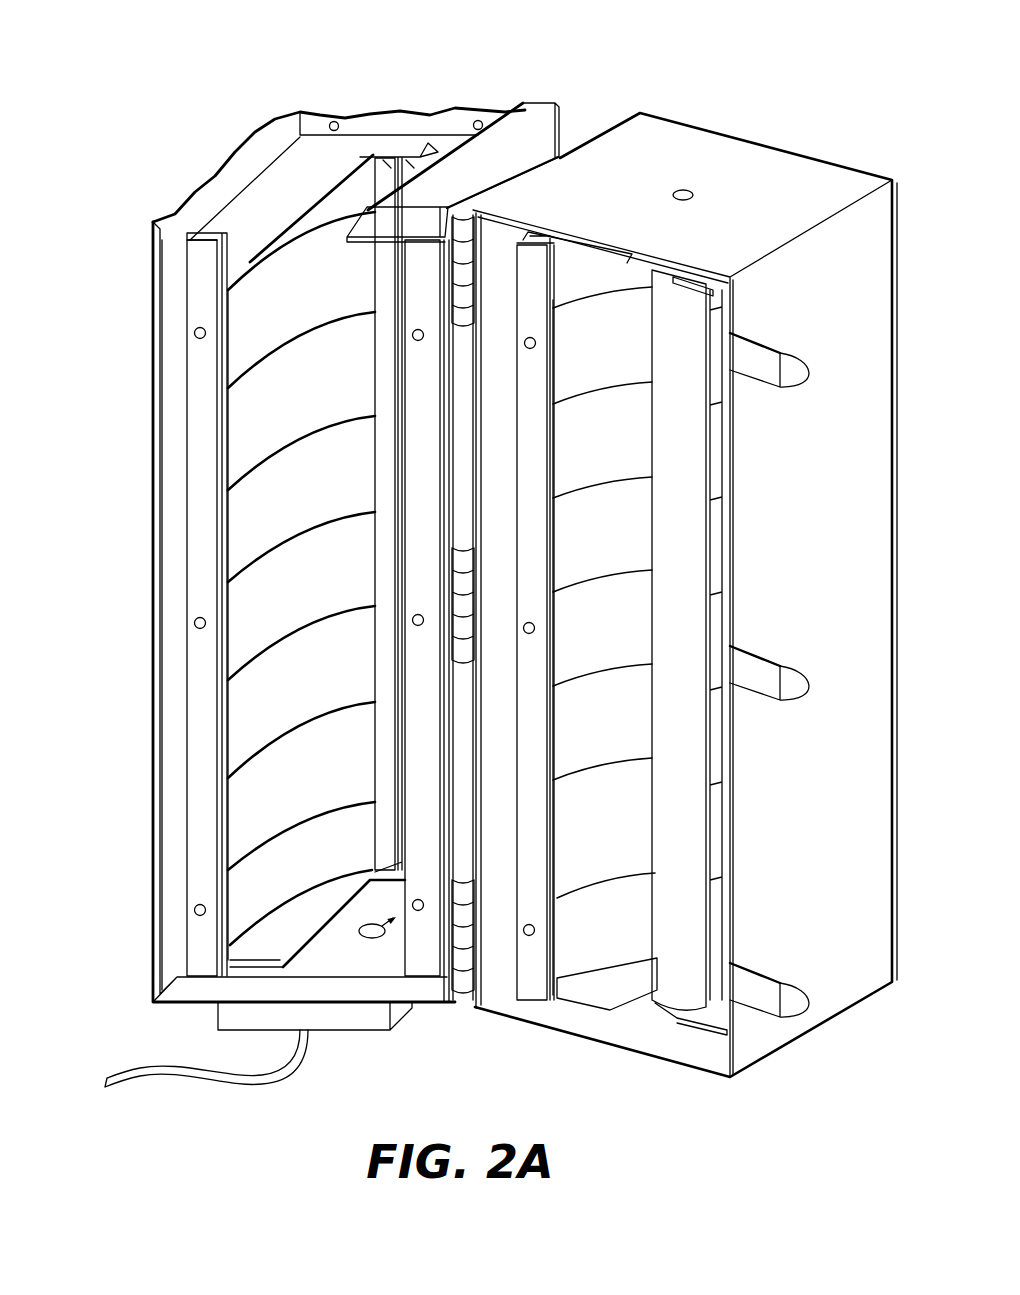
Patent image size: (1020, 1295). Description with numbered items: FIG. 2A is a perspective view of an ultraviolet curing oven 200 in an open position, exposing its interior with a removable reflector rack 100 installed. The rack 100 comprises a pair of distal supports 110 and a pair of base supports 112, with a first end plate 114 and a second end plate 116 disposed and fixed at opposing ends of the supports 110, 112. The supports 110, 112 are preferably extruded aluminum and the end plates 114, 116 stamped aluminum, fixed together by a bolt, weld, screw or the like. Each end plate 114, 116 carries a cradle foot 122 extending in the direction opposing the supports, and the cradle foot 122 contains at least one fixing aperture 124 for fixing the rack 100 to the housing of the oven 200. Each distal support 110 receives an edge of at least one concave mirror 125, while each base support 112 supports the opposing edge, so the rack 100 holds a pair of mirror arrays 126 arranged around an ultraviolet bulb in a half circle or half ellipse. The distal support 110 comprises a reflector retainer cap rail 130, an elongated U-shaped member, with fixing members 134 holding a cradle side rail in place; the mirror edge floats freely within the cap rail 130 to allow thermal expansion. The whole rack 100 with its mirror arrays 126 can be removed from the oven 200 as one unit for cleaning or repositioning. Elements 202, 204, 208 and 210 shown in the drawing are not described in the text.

The removable reflector rack 100 is at (255, 982).
The distal support 110 is at (203, 481).
The base support 112 is at (410, 165).
The first end plate 114 is at (292, 948).
The second end plate 116 is at (297, 213).
The cradle foot 122 is at (332, 118).
The fixing aperture 124 is at (340, 116).
The mirror 125 is at (258, 305).
The mirror array 126 is at (314, 913).
The reflector retainer cap rail 130 is at (200, 826).
The fixing member 134 is at (195, 915).
The ultraviolet curing oven 200 is at (188, 126).
The cover plate 202 is at (532, 112).
The enclosure 204 is at (745, 165).
The support rod 208 is at (686, 402).
The cord grommet 210 is at (372, 940).